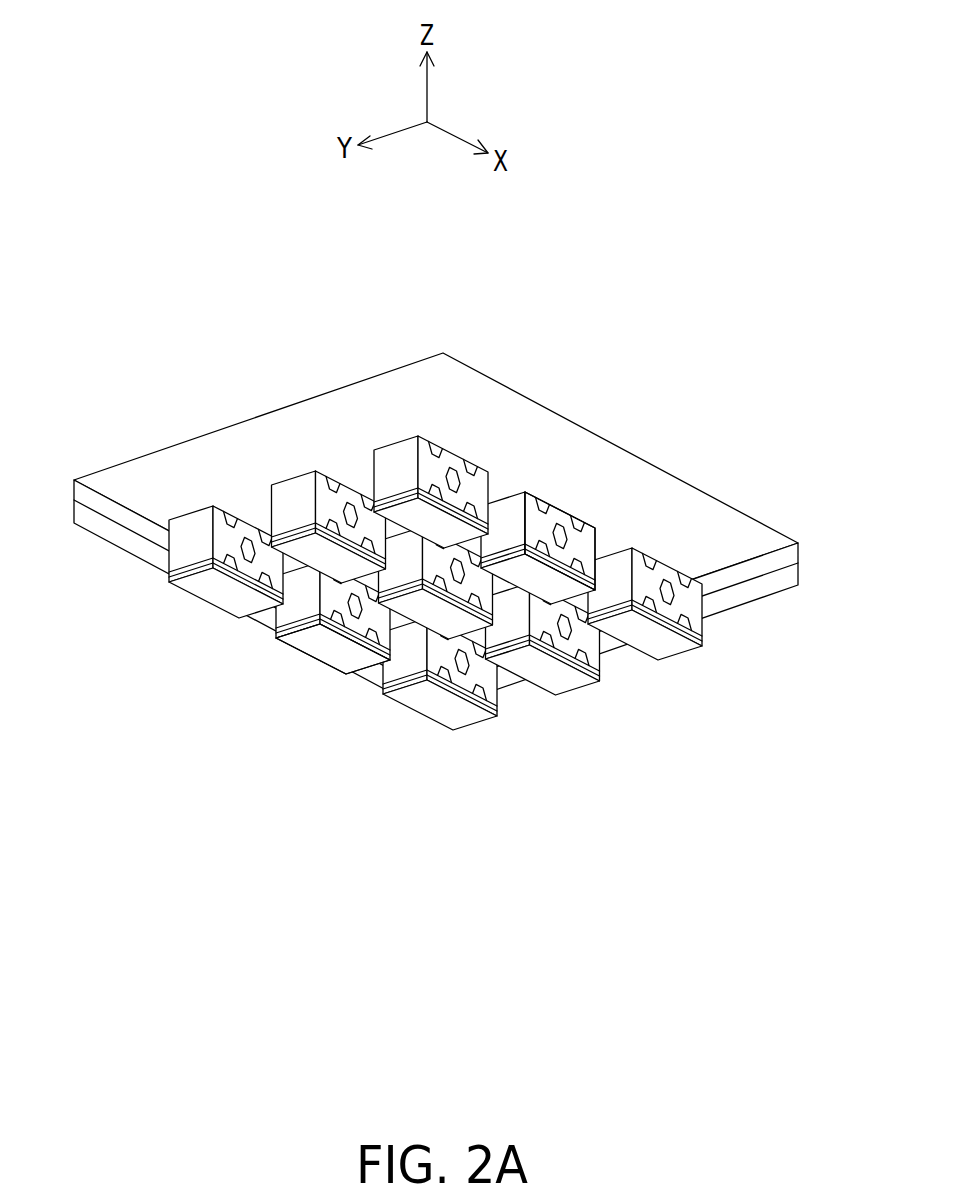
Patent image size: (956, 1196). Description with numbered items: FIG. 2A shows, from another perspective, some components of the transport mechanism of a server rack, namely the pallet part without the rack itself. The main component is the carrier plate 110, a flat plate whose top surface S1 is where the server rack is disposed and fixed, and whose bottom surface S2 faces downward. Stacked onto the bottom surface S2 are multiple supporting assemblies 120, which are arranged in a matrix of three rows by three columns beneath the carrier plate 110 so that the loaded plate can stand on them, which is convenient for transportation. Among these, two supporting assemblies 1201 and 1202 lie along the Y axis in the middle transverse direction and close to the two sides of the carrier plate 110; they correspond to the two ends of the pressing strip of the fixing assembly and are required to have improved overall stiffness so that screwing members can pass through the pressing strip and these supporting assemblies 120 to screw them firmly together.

The carrier plate 110 is at (434, 483).
The supporting assemblies 120 is at (435, 612).
The supporting assembly 1201 is at (583, 544).
The supporting assembly 1202 is at (332, 653).
The top surface S1 is at (258, 417).
The bottom surface S2 is at (143, 537).